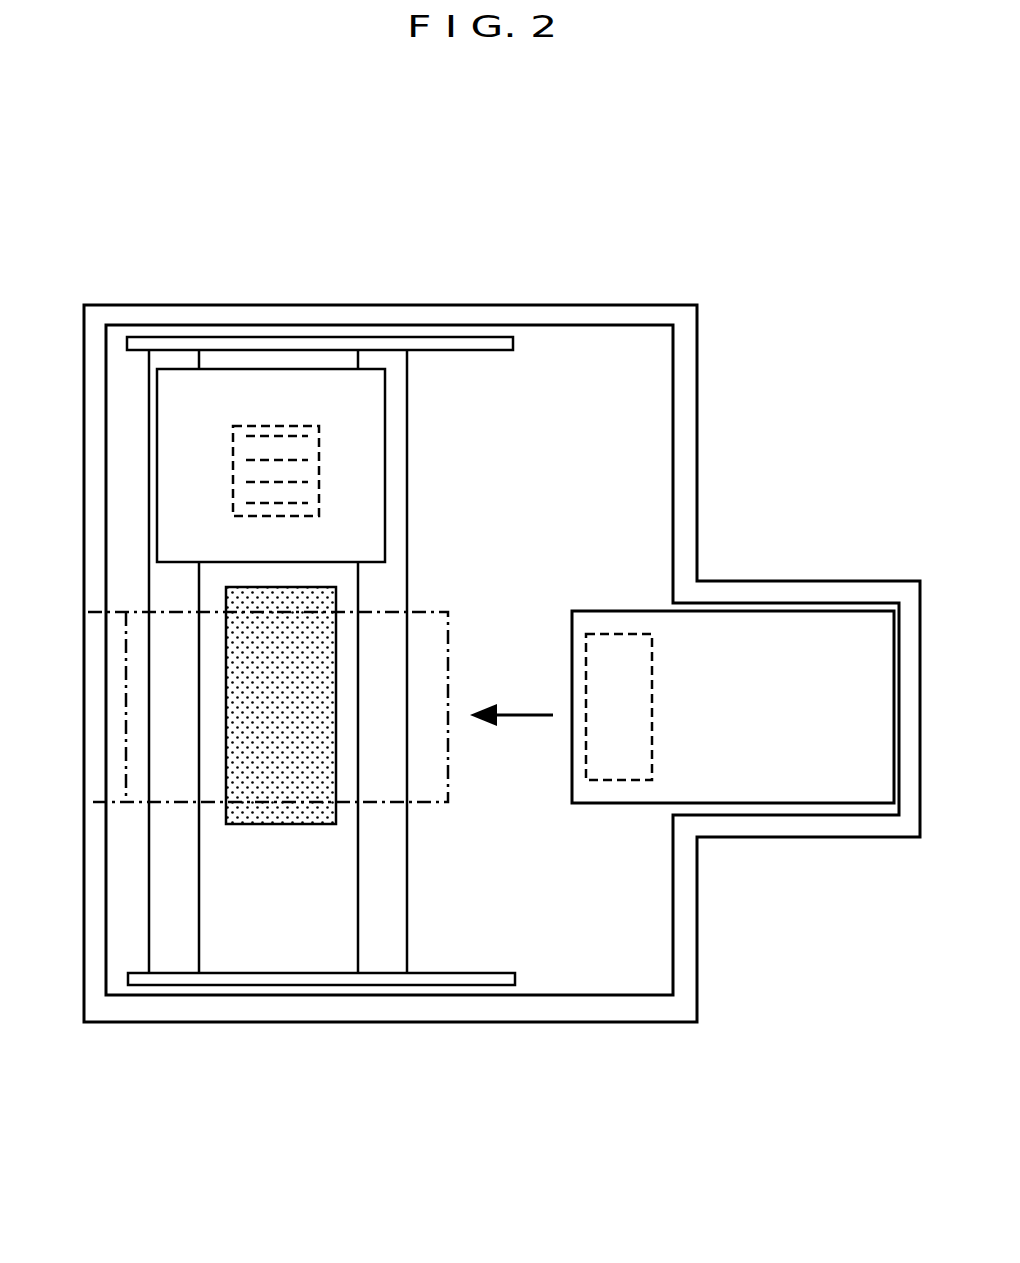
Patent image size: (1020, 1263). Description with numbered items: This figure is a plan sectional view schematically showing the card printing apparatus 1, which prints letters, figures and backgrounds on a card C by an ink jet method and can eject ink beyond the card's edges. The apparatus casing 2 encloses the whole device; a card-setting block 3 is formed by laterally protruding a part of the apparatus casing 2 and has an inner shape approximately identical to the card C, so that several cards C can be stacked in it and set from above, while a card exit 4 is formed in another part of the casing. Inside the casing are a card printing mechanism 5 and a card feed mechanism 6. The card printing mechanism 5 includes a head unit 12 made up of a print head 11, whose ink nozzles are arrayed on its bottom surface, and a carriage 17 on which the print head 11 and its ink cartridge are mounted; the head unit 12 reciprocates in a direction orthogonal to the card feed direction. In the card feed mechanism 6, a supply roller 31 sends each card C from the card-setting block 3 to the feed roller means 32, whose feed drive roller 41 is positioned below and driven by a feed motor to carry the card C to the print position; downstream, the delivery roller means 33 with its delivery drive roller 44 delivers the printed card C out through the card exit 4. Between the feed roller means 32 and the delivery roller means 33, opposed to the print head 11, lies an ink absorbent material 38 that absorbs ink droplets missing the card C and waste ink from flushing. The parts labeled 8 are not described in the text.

The card printing apparatus 1 is at (481, 600).
The apparatus casing 2 is at (655, 303).
The card-setting block 3 is at (858, 580).
The card exit 4 is at (102, 800).
The card printing mechanism 5 is at (434, 672).
The card feed mechanism 6 is at (682, 684).
The guide plate 8 is at (485, 335).
The print head 11 is at (318, 489).
The head unit 12 is at (398, 518).
The carriage 17 is at (367, 545).
The supply roller 31 is at (617, 783).
The feed roller means 32 is at (408, 900).
The feed drive roller 41 is at (354, 661).
The delivery roller means 33 is at (200, 952).
The delivery drive roller 44 is at (278, 661).
The ink absorbent material 38 is at (283, 816).
The card C is at (449, 774).